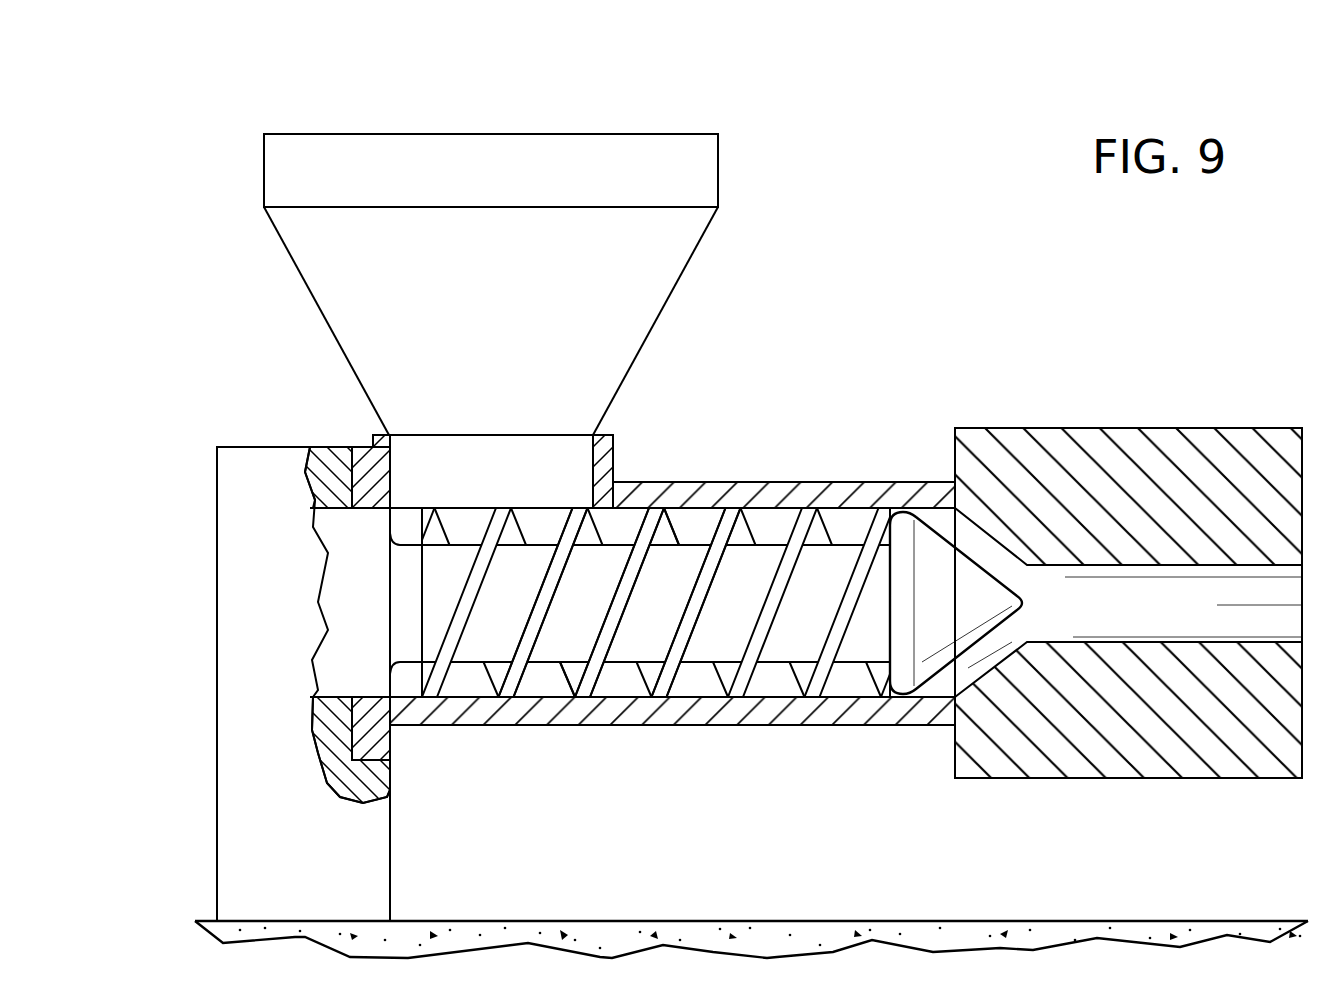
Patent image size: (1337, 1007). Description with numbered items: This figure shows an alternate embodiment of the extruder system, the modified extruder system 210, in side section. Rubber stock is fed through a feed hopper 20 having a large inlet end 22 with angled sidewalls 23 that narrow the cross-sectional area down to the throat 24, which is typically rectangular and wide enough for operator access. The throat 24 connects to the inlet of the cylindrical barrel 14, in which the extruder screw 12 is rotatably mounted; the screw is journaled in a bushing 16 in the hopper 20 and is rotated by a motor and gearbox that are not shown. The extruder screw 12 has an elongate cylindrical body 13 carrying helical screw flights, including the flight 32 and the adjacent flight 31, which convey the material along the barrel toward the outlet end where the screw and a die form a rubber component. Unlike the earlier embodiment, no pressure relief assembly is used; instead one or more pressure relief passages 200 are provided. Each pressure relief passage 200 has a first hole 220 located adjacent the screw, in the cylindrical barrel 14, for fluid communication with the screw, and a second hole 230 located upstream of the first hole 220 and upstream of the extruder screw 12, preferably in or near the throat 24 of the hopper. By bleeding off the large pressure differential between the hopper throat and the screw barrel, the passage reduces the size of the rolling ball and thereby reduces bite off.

The feed hopper 20 is at (296, 118).
The inlet end 22 is at (655, 321).
The angled sidewalls 23 is at (505, 327).
The throat 24 is at (357, 425).
The modified extruder system 210 is at (727, 384).
The second hole 230 is at (652, 536).
The pressure relief passage 200 is at (603, 535).
The first hole 220 is at (632, 507).
The bushing 16 is at (383, 728).
The flight 31 is at (512, 690).
The helical screw flight 32 is at (592, 690).
The cylindrical barrel 14 is at (696, 737).
The extruder screw 12 is at (781, 634).
The elongate cylindrical body 13 is at (856, 651).